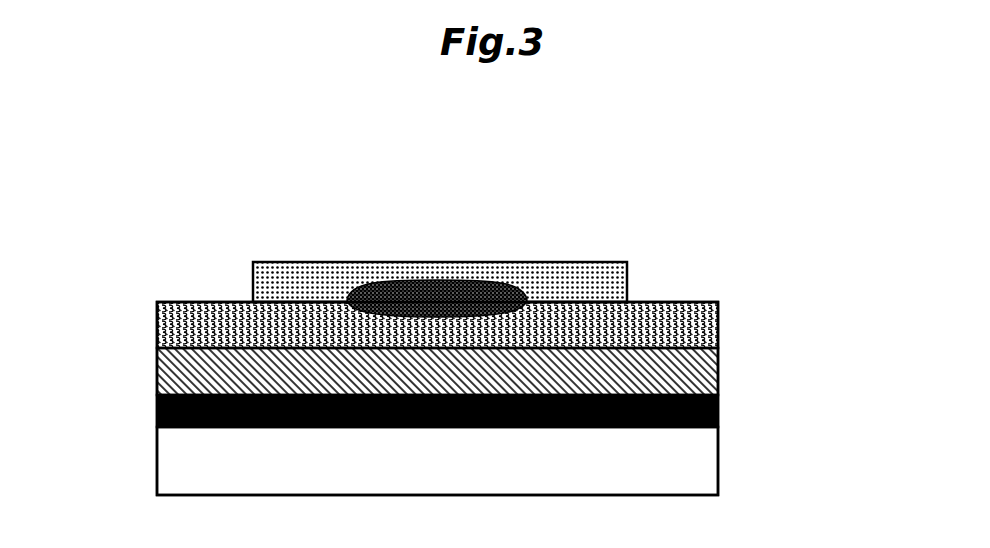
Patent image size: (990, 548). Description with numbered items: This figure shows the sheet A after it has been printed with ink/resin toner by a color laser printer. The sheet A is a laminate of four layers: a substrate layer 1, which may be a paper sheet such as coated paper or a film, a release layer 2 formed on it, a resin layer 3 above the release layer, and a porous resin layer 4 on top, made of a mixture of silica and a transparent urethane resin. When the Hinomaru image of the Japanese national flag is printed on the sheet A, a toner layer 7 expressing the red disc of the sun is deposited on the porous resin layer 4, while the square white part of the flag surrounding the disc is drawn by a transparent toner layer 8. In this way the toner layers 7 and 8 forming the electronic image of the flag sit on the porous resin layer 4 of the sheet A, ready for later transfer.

The substrate layer 1 is at (708, 453).
The release layer 2 is at (718, 407).
The resin layer 3 is at (718, 369).
The porous resin layer 4 is at (718, 332).
The toner layer 7 is at (527, 292).
The transparent toner layer 8 is at (593, 262).
The sheet A is at (155, 301).